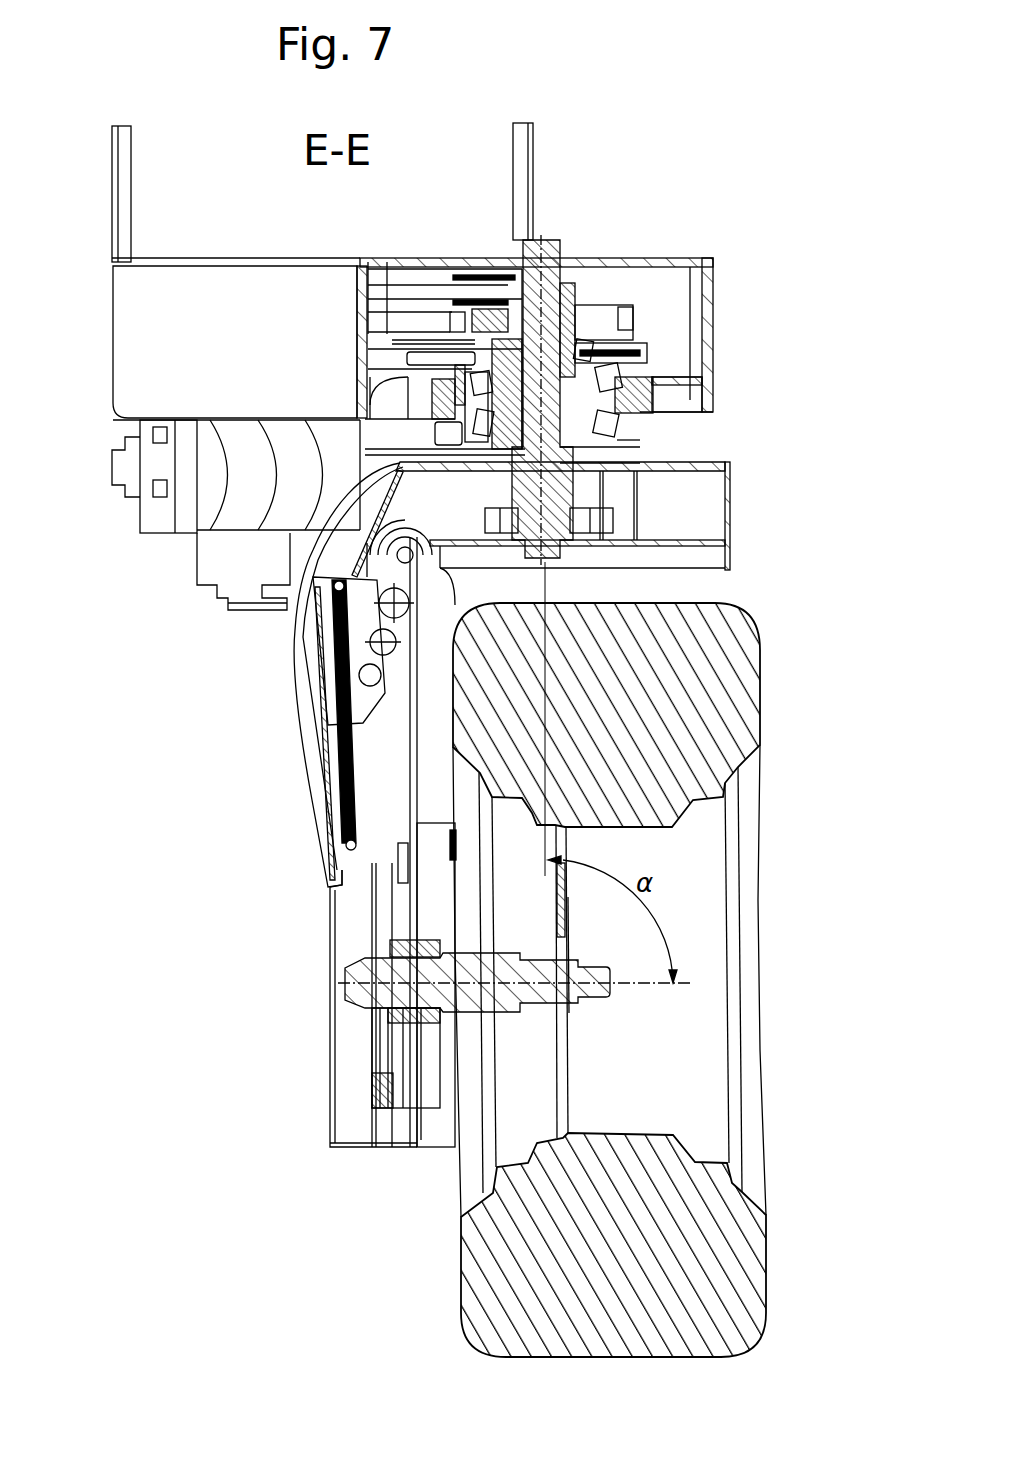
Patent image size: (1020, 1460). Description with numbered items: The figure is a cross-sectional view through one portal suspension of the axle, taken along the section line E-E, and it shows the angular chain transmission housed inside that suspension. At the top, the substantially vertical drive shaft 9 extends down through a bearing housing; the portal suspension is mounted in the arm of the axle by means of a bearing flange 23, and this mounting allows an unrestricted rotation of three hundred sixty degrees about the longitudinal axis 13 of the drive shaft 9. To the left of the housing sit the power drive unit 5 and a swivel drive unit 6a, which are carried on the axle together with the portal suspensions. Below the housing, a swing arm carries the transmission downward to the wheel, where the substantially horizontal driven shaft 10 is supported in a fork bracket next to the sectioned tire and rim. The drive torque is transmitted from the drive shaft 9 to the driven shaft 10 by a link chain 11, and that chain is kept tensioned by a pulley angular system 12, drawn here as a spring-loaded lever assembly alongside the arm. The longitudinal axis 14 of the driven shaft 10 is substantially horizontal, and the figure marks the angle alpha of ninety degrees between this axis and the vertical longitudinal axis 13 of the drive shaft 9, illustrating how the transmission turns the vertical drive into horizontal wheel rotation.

The power drive unit 5 is at (190, 569).
The swivel drive unit 6a is at (282, 528).
The drive shaft 9 is at (567, 255).
The driven shaft 10 is at (345, 1002).
The link chain 11 is at (348, 842).
The pulley angular system 12 is at (358, 658).
The longitudinal axis of the drive shaft 13 is at (532, 262).
The longitudinal axis of the driven shaft 14 is at (490, 985).
The bearing flange 23 is at (638, 437).